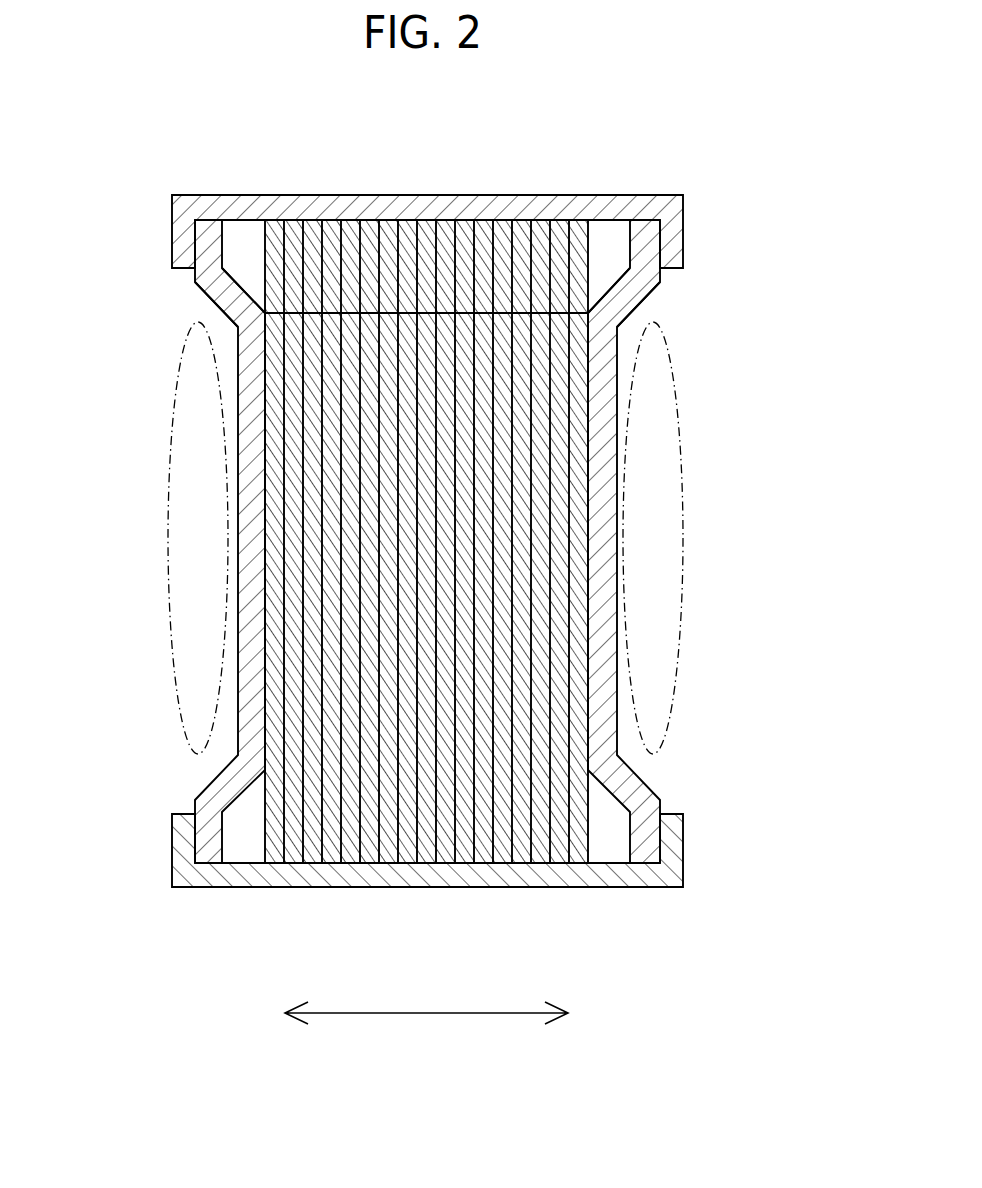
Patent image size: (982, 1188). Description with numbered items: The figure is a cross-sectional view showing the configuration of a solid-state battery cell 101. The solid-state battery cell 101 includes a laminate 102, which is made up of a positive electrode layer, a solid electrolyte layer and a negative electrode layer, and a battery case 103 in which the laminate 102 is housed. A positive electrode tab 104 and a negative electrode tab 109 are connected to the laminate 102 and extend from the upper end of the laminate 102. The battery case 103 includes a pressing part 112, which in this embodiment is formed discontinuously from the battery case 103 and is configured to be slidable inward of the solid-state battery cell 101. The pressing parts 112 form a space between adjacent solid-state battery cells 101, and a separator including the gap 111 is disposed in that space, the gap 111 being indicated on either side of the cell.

The solid-state battery cell 101 is at (752, 167).
The laminate 102 is at (428, 853).
The battery case 103 is at (628, 878).
The positive electrode tab 104 is at (355, 255).
The negative electrode tab 109 is at (426, 495).
The gap 111 is at (188, 543).
The pressing part 112 is at (195, 287).